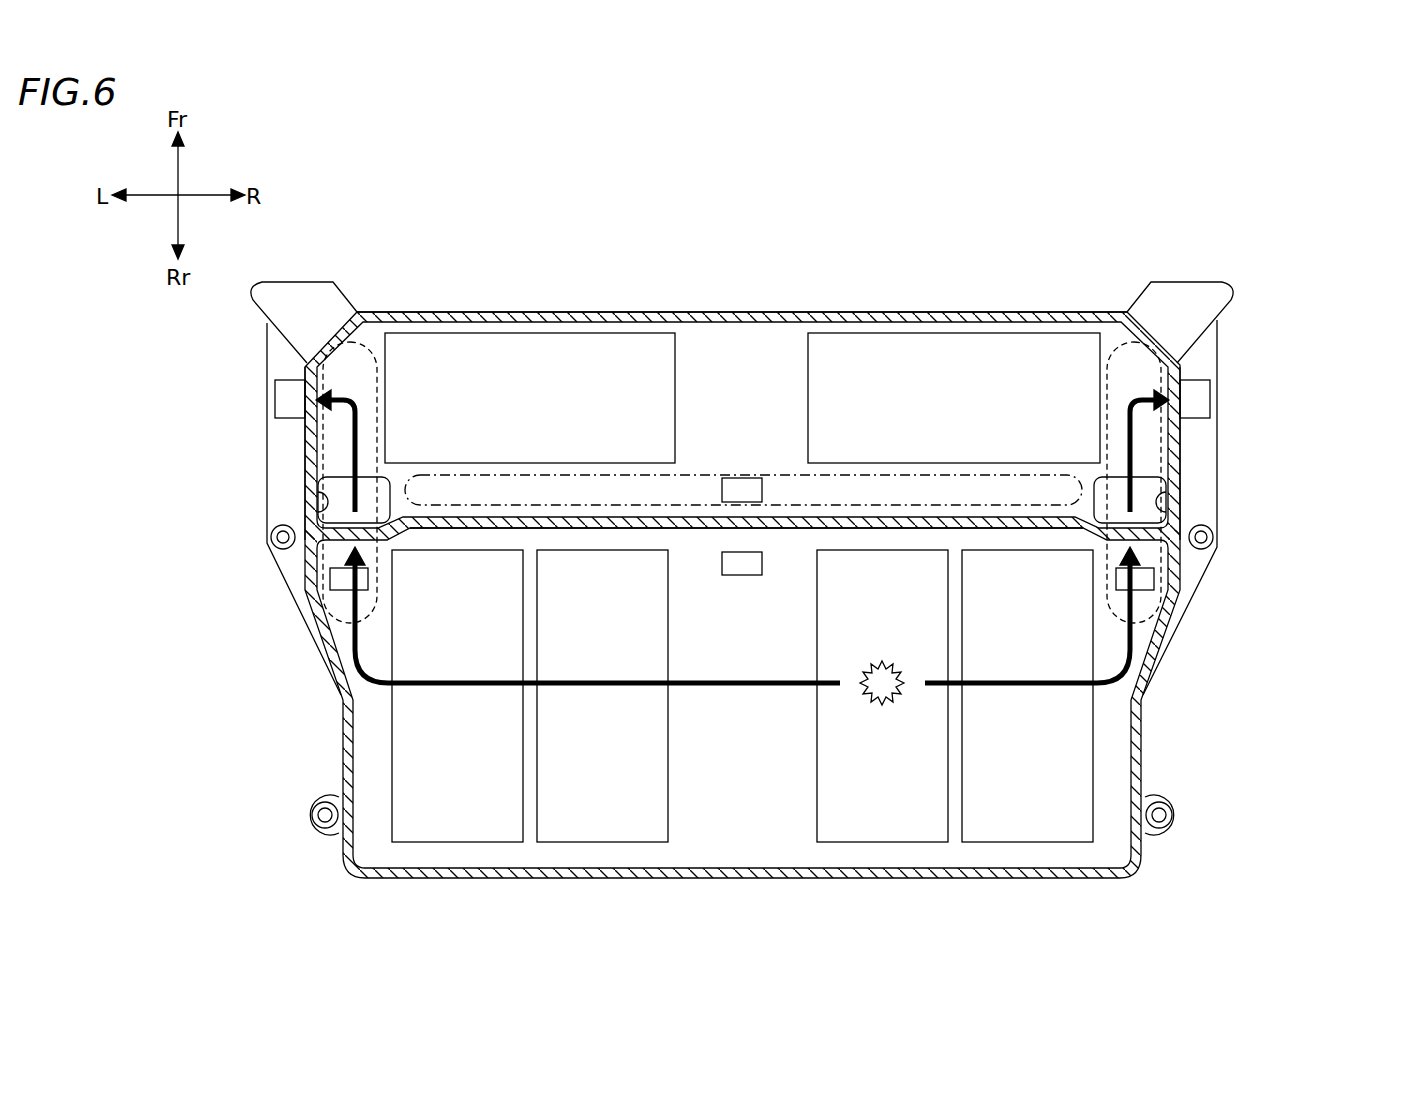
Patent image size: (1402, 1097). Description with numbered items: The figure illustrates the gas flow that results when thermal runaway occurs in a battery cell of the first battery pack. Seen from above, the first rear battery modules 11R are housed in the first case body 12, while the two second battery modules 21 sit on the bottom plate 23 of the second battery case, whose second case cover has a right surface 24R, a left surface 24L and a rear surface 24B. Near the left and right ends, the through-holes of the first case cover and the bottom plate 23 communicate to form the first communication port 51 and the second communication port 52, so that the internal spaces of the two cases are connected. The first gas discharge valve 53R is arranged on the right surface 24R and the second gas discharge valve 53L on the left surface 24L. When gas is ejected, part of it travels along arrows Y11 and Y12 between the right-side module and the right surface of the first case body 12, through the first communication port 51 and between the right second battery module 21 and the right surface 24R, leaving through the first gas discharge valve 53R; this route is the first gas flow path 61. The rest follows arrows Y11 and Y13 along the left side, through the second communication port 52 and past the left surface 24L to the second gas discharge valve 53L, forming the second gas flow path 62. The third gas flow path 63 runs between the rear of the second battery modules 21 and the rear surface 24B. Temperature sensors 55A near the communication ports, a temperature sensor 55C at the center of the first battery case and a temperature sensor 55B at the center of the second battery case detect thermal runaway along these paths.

The first rear battery module 11R is at (605, 810).
The first case body 12 is at (343, 732).
The second battery module 21 is at (530, 363).
The bottom plate 23 is at (443, 312).
The left surface of the second case cover 24L is at (305, 429).
The right surface of the second case cover 24R is at (1180, 437).
The rear surface of the second case cover 24B is at (805, 530).
The first communication port 51 is at (1155, 492).
The second communication port 52 is at (330, 492).
The second gas discharge valve 53L is at (275, 395).
The first gas discharge valve 53R is at (1210, 395).
The temperature sensor 55A is at (345, 592).
The temperature sensor 55B is at (740, 478).
The temperature sensor 55C is at (740, 576).
The first gas flow path 61 is at (1108, 570).
The second gas flow path 62 is at (375, 570).
The third gas flow path 63 is at (788, 470).
The arrow Y11 is at (757, 688).
The arrow Y12 is at (1135, 440).
The arrow Y13 is at (357, 421).